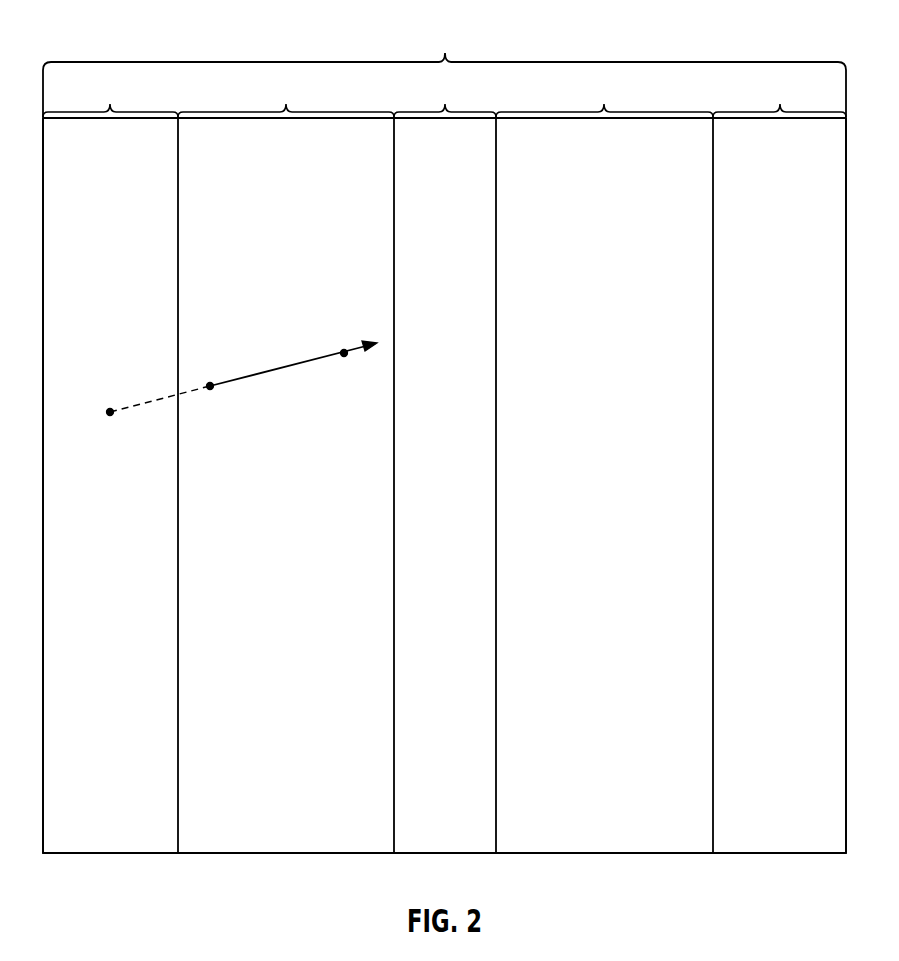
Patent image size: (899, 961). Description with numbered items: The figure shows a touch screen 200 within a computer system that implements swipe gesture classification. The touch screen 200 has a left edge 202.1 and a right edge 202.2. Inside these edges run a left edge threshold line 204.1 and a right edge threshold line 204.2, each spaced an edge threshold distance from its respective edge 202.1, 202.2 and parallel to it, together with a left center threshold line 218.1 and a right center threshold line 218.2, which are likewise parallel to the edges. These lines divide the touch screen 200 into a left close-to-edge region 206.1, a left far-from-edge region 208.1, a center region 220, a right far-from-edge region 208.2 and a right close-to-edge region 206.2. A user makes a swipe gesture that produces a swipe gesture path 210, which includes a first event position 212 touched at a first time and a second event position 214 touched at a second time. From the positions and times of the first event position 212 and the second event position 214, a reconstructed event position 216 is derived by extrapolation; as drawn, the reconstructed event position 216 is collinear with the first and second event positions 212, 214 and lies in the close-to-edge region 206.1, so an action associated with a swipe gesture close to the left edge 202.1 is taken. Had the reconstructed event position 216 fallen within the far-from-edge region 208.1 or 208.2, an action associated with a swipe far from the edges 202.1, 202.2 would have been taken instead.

The touch screen 200 is at (444, 428).
The close-to-edge region 206.1 is at (110, 466).
The far-from-edge region 208.1 is at (286, 466).
The center region 220 is at (445, 466).
The far-from-edge region 208.2 is at (604, 466).
The close-to-edge region 206.2 is at (779, 466).
The left edge 202.1 is at (43, 185).
The left edge threshold line 204.1 is at (178, 185).
The left center threshold line 218.1 is at (394, 185).
The right center threshold line 218.2 is at (496, 185).
The right edge threshold line 204.2 is at (713, 185).
The right edge 202.2 is at (846, 185).
The swipe gesture path 210 is at (280, 368).
The first event position 212 is at (210, 389).
The second event position 214 is at (344, 356).
The reconstructed event position 216 is at (110, 415).